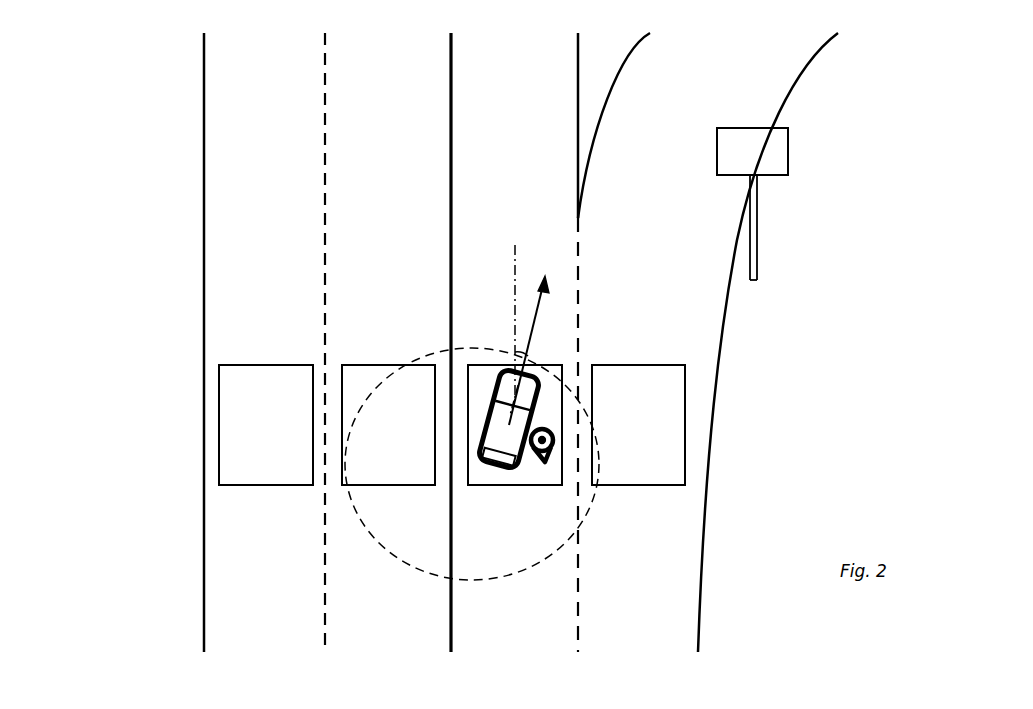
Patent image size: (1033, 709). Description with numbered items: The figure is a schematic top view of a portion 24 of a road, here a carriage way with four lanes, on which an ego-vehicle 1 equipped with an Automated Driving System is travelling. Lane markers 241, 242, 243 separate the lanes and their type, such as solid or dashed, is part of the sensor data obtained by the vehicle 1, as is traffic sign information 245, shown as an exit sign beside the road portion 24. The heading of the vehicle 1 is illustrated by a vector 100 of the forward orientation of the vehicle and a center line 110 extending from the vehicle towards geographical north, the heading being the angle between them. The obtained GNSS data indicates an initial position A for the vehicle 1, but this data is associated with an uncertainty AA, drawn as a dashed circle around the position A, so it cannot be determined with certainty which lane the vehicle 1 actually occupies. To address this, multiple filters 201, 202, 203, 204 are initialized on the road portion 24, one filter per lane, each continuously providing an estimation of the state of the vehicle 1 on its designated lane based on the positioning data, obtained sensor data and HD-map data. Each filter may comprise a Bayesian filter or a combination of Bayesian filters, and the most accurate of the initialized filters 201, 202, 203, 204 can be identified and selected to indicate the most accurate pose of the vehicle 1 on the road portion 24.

The road portion 24 is at (183, 232).
The lane marker 243 is at (332, 156).
The lane marker 242 is at (459, 182).
The lane marker 241 is at (590, 213).
The traffic sign information 245 is at (788, 150).
The filter 201 is at (233, 365).
The filter 202 is at (350, 365).
The filter 203 is at (565, 372).
The filter 204 is at (682, 395).
The center line 110 is at (518, 289).
The vector 100 is at (540, 308).
The vehicle 1 is at (510, 470).
The initial position A is at (546, 462).
The uncertainty AA is at (590, 521).